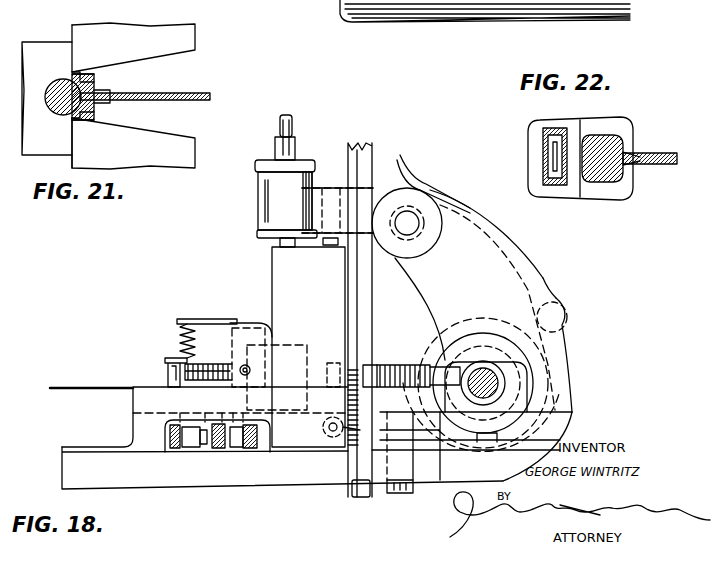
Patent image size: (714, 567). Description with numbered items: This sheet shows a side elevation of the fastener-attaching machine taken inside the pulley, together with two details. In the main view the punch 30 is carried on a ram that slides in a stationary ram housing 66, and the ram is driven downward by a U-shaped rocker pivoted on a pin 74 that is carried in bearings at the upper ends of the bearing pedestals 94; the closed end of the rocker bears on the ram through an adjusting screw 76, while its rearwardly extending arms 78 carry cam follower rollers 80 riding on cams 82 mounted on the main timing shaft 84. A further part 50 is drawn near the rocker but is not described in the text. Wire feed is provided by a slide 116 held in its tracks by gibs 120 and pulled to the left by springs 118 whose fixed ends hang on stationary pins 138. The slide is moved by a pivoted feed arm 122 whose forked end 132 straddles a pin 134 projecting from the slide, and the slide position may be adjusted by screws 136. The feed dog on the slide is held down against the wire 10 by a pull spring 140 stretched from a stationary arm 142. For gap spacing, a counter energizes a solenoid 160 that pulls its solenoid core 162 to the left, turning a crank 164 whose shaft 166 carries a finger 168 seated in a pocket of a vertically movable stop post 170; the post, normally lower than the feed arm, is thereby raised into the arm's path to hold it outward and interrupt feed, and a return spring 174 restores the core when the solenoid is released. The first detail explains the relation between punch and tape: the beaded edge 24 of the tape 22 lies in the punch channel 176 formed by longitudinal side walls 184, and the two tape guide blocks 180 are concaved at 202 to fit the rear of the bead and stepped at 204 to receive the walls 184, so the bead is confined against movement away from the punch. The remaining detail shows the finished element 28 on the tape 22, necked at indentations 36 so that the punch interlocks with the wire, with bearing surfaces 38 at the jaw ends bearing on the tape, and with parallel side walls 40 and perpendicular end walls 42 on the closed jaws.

In FIG. 18, the wire 10 is at (304, 427).
In FIG. 21, the tape 22 is at (145, 89).
In FIG. 22, the tape 22 is at (660, 164).
In FIG. 18, the tape 22 is at (368, 145).
In FIG. 21, the beaded edge 24 is at (108, 93).
In FIG. 22, the finished element 28 is at (590, 130).
In FIG. 21, the punch 30 is at (56, 112).
In FIG. 22, the indentations 36 is at (560, 122).
In FIG. 22, the bearing surfaces 38 is at (625, 150).
In FIG. 22, the side walls 40 is at (625, 122).
In FIG. 22, the end walls 42 is at (635, 158).
In FIG. 18, the hook arm 50 is at (433, 176).
In FIG. 18, the ram housing 66 is at (272, 258).
In FIG. 18, the pin 74 is at (410, 222).
In FIG. 18, the adjusting screw 76 is at (328, 185).
In FIG. 18, the arms 78 is at (548, 292).
In FIG. 18, the cam follower rollers 80 is at (567, 313).
In FIG. 18, the cams 82 is at (565, 366).
In FIG. 18, the main timing shaft 84 is at (483, 368).
In FIG. 18, the bearing pedestals 94 is at (500, 225).
In FIG. 18, the slide 116 is at (150, 399).
In FIG. 18, the springs 118 is at (206, 362).
In FIG. 18, the gibs 120 is at (140, 386).
In FIG. 18, the feed arm 122 is at (388, 364).
In FIG. 18, the end of the feed arm 132 is at (190, 448).
In FIG. 18, the pin 134 is at (217, 448).
In FIG. 18, the screws 136 is at (170, 450).
In FIG. 18, the stationary pins 138 is at (170, 366).
In FIG. 18, the pull spring 140 is at (182, 330).
In FIG. 18, the stationary arm 142 is at (207, 319).
In FIG. 18, the solenoid 160 is at (280, 345).
In FIG. 18, the solenoid core 162 is at (333, 363).
In FIG. 18, the crank 164 is at (325, 412).
In FIG. 18, the shaft 166 is at (348, 440).
In FIG. 18, the finger 168 is at (413, 450).
In FIG. 18, the stop post 170 is at (408, 492).
In FIG. 18, the return spring 174 is at (372, 363).
In FIG. 21, the channel 176 is at (82, 80).
In FIG. 21, the tape guides 180 is at (145, 26).
In FIG. 21, the side walls 184 is at (98, 78).
In FIG. 21, the concaved portion 202 is at (98, 86).
In FIG. 21, the stepped recess 204 is at (76, 70).